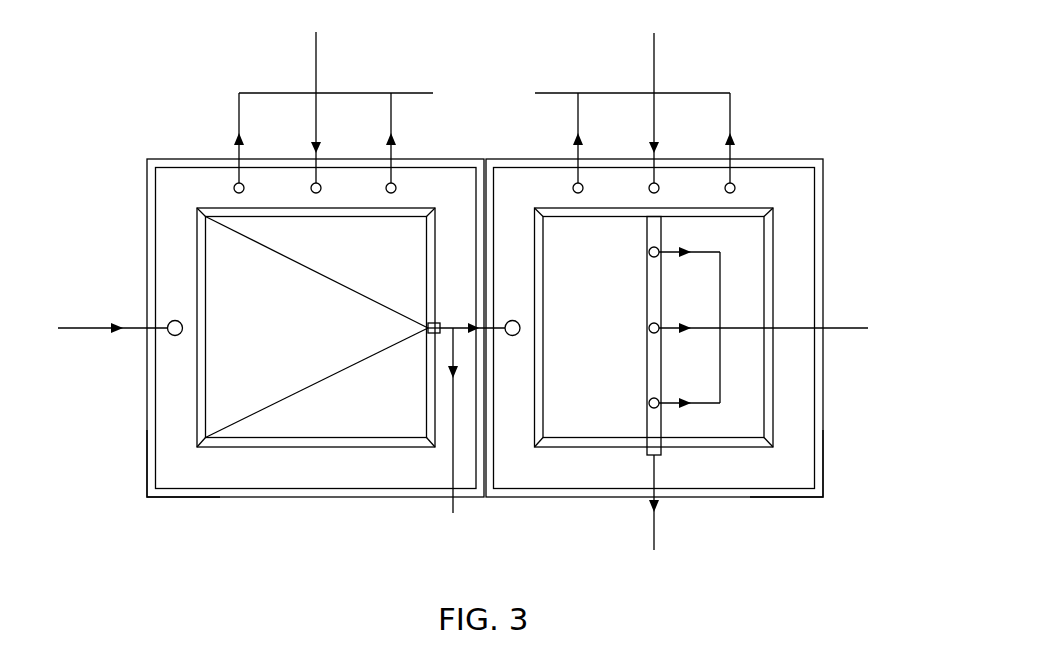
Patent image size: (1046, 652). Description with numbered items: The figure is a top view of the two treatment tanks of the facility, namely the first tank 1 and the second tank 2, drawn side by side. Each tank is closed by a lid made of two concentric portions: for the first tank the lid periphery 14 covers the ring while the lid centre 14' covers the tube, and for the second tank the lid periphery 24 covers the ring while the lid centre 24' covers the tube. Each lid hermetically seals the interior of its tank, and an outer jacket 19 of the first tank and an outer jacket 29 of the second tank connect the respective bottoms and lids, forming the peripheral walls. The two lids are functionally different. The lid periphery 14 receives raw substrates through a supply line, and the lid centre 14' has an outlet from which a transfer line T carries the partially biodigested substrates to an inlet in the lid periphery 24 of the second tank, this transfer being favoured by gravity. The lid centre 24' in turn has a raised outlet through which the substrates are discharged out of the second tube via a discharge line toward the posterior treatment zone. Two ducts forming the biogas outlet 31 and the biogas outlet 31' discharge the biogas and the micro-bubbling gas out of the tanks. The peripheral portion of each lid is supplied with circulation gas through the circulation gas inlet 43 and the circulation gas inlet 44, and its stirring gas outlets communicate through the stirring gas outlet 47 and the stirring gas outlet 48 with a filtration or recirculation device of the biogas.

The first tank 1 is at (195, 503).
The second tank 2 is at (762, 505).
The lid periphery 14 is at (279, 262).
The lid centre 14' is at (253, 322).
The outer jacket 19 is at (147, 443).
The lid periphery 24 is at (676, 269).
The lid centre 24' is at (743, 324).
The outer jacket 29 is at (823, 448).
The biogas outlet 31 is at (785, 384).
The biogas outlet 31' is at (444, 436).
The circulation gas inlet 43 is at (317, 97).
The circulation gas inlet 44 is at (655, 97).
The stirring gas outlet 47 is at (373, 93).
The stirring gas outlet 48 is at (597, 93).
The transfer line T is at (500, 336).